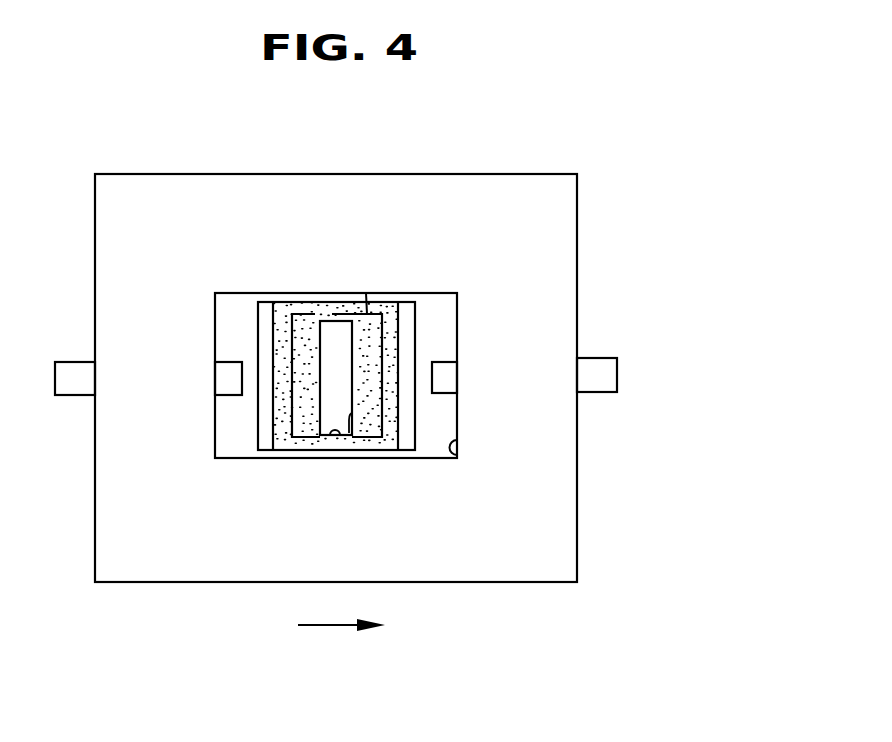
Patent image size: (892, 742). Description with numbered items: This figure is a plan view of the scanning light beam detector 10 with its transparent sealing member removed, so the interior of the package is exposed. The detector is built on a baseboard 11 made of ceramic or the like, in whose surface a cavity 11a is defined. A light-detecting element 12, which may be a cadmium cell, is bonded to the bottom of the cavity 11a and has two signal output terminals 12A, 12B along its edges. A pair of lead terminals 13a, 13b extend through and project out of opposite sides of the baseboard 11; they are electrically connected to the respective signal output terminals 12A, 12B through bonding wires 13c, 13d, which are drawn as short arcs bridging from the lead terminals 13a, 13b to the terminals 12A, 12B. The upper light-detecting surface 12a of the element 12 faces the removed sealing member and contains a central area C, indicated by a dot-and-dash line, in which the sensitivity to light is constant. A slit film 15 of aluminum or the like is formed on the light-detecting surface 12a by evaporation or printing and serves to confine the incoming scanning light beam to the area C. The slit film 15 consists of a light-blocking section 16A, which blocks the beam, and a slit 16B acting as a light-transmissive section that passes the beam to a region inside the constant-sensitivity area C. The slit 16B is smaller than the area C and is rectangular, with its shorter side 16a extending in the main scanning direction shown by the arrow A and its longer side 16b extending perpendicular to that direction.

The scanning light beam detector 10 is at (349, 378).
The baseboard 11 is at (545, 295).
The cavity 11a is at (458, 460).
The light-detecting element 12 is at (430, 337).
The signal output terminal 12A is at (268, 313).
The signal output terminal 12B is at (405, 316).
The light-detecting surface 12a is at (343, 380).
The lead terminal 13a is at (79, 368).
The lead terminal 13b is at (597, 380).
The bonding wire 13c is at (268, 378).
The bonding wire 13d is at (407, 377).
The slit film 15 is at (255, 440).
The light-blocking section 16A is at (305, 427).
The slit 16B is at (307, 393).
The shorter side 16a is at (333, 436).
The longer side 16b is at (340, 438).
The central area C is at (366, 291).
The main scanning direction A is at (341, 638).